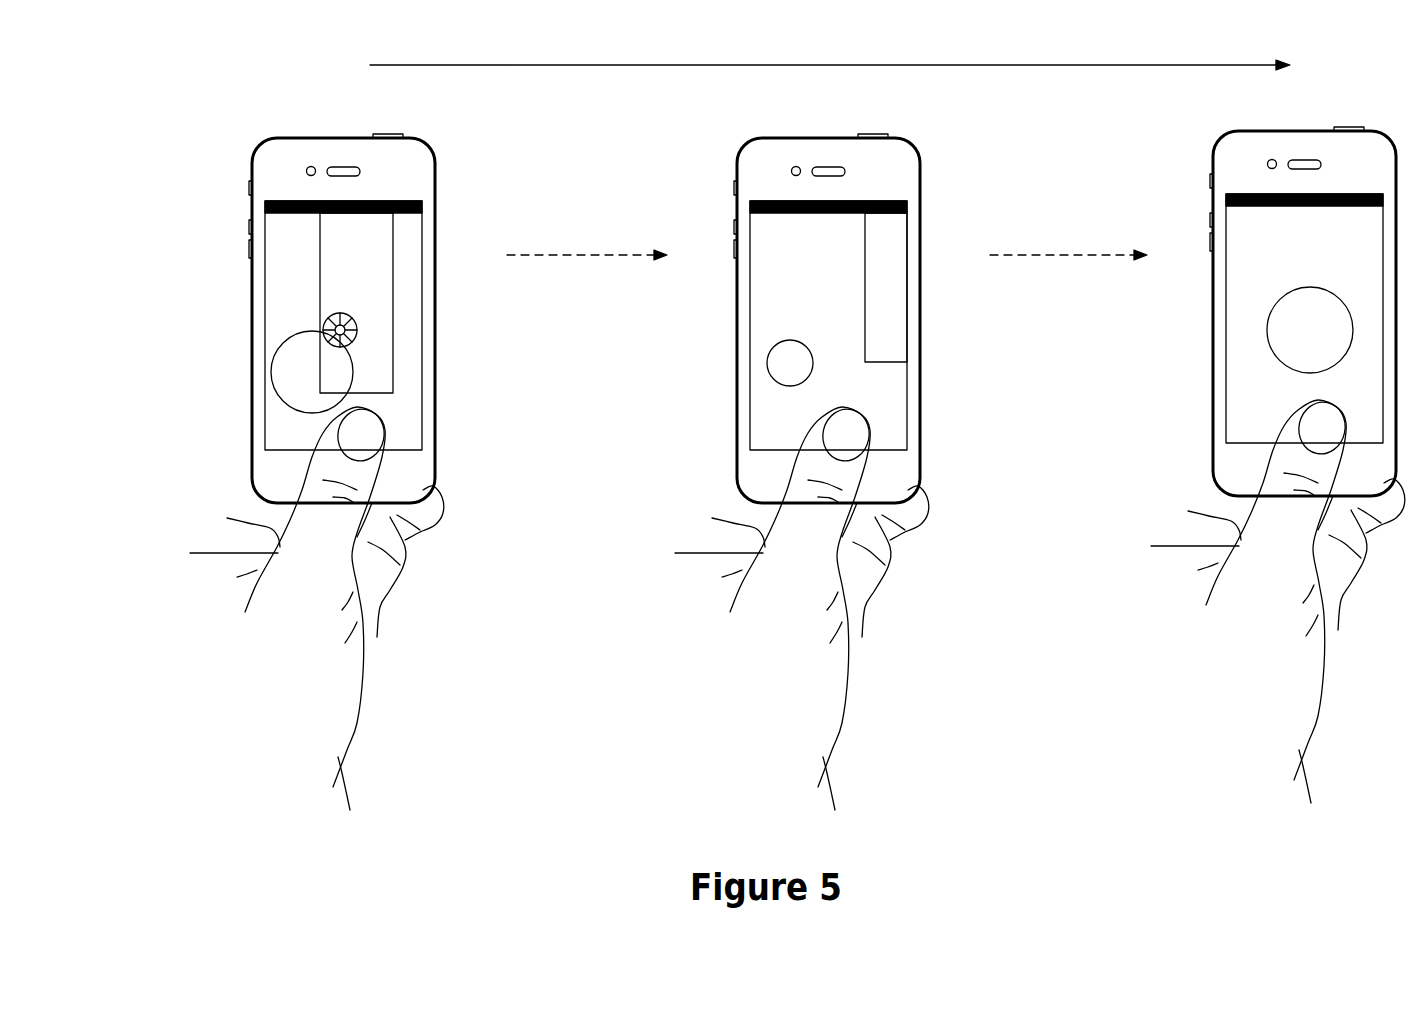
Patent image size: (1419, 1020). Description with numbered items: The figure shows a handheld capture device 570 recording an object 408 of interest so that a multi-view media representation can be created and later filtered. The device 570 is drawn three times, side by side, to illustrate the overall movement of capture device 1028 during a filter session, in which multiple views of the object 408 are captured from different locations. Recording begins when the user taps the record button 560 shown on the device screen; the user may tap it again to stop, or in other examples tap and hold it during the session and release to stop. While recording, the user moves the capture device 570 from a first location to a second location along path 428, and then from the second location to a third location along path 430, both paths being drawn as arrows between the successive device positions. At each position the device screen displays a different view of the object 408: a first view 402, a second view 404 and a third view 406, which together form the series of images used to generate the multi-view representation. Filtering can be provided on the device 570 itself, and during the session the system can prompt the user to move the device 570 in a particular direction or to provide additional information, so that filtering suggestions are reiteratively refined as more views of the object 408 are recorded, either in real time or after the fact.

The movement of capture device 1028 is at (830, 51).
The capture device 570 is at (252, 373).
The record button 560 is at (333, 317).
The object 408 is at (353, 375).
The view 402 is at (285, 433).
The view 404 is at (777, 435).
The view 406 is at (1255, 428).
The path 428 is at (587, 243).
The path 430 is at (1068, 243).